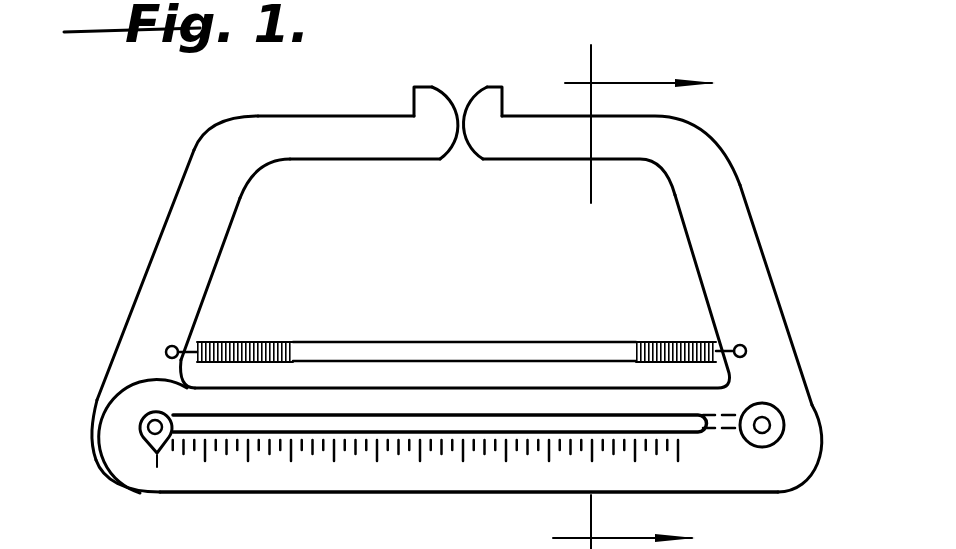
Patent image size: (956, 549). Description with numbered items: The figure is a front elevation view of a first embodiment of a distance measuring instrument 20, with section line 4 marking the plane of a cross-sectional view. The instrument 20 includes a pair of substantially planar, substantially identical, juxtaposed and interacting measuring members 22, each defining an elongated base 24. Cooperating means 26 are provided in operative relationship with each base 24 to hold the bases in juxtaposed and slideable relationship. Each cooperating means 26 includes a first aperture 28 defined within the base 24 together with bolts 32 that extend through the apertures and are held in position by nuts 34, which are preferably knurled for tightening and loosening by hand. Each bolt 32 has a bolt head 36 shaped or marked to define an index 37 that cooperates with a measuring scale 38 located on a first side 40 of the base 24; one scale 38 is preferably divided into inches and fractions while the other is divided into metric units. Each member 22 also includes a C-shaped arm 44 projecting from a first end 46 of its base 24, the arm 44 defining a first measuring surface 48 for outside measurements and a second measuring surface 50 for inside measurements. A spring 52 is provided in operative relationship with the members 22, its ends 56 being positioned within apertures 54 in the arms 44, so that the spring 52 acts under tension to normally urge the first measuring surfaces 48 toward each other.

The section line 4- 4 is at (650, 297).
The distance measuring instrument 20 is at (748, 146).
The measuring member 22 is at (165, 265).
The elongated base 24 is at (462, 483).
The cooperating means 26 is at (140, 447).
The first aperture 28 is at (783, 422).
The bolt 32 is at (147, 426).
The nut 34 is at (773, 447).
The bolt head 36 is at (200, 386).
The index 37 is at (133, 484).
The measuring scale 38 is at (248, 468).
The first side 40 is at (377, 483).
The C-shaped arm 44 is at (766, 287).
The first end 46 is at (100, 399).
The first measuring surface 48 is at (462, 110).
The second measuring surface 50 is at (415, 98).
The spring 52 is at (478, 341).
The aperture 54 is at (180, 342).
The spring end 56 is at (165, 352).